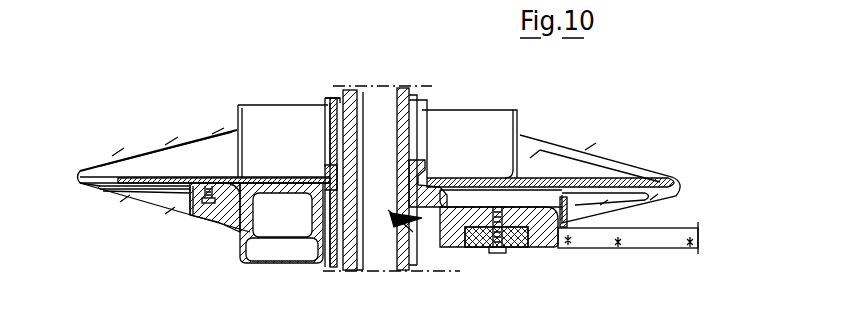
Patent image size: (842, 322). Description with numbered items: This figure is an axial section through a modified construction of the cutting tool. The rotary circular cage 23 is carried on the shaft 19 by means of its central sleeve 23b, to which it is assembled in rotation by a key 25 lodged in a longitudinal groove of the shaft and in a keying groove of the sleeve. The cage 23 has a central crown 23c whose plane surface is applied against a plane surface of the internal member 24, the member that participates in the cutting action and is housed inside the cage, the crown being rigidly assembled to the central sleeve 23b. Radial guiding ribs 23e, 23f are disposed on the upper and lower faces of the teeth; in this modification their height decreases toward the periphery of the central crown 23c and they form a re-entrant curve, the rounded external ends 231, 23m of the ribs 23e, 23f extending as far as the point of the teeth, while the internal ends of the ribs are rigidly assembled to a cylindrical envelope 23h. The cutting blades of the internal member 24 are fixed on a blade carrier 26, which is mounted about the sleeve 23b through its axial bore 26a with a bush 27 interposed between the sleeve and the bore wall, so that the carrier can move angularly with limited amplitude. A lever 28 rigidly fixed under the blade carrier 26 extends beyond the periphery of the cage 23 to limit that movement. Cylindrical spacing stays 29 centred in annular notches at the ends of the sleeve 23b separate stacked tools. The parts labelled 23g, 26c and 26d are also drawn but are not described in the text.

The shaft 19 is at (408, 84).
The rotary circular cage 23 is at (165, 131).
The external end of the upper rib 231 is at (78, 167).
The upper guiding rib 23e is at (134, 165).
The lower guiding rib 23f is at (122, 196).
The left holder box 23g is at (238, 153).
The central sleeve 23b is at (418, 168).
The central crown 23c is at (652, 177).
The cylindrical envelope 23h is at (593, 210).
The external end of the lower rib 23m is at (76, 190).
The internal member 24 is at (148, 192).
The key 25 is at (327, 167).
The cylindrical spacing stay 29 is at (337, 180).
The bush 27 is at (432, 187).
The blade carrier 26 is at (548, 241).
The axial bore 26a is at (414, 232).
The housing 26c is at (242, 238).
The boss 26d is at (209, 224).
The lever 28 is at (638, 240).